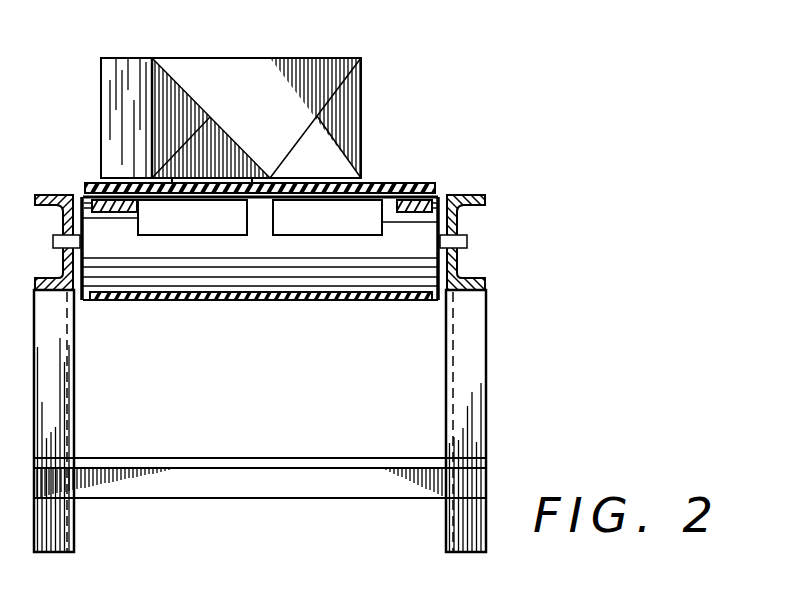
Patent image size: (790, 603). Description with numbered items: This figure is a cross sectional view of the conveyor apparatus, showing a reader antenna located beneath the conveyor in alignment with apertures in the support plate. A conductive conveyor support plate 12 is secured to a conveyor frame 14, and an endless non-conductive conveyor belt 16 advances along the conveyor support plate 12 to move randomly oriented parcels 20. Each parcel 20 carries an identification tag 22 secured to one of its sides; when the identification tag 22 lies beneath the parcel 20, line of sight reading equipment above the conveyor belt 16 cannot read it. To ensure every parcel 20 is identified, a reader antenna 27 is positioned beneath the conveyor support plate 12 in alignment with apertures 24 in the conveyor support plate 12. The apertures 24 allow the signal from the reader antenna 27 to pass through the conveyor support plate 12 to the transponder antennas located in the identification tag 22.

The conveyor support plate 12 is at (87, 185).
The conveyor frame 14 is at (472, 353).
The conveyor belt 16 is at (392, 183).
The parcel 20 is at (352, 90).
The identification tag 22 is at (250, 181).
The aperture 24 is at (348, 197).
The second reader antenna 27 is at (230, 235).